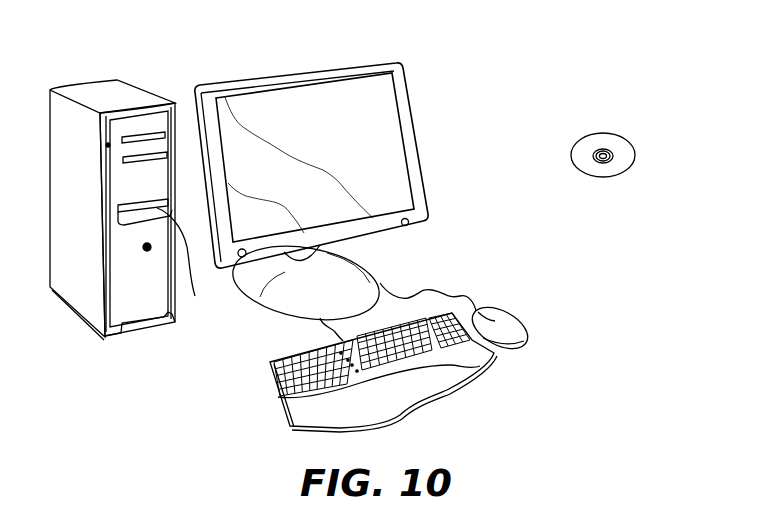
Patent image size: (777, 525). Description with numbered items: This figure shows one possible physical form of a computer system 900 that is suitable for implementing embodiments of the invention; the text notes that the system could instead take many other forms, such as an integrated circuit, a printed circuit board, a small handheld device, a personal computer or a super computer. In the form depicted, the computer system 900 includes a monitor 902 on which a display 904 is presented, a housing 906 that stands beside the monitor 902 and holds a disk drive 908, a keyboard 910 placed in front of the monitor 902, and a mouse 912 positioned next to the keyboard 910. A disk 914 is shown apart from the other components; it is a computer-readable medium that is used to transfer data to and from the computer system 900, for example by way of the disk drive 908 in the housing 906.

The computer system 900 is at (534, 47).
The monitor 902 is at (420, 163).
The display 904 is at (375, 102).
The housing 906 is at (100, 92).
The disk drive 908 is at (191, 265).
The keyboard 910 is at (283, 397).
The mouse 912 is at (520, 320).
The disk 914 is at (620, 133).